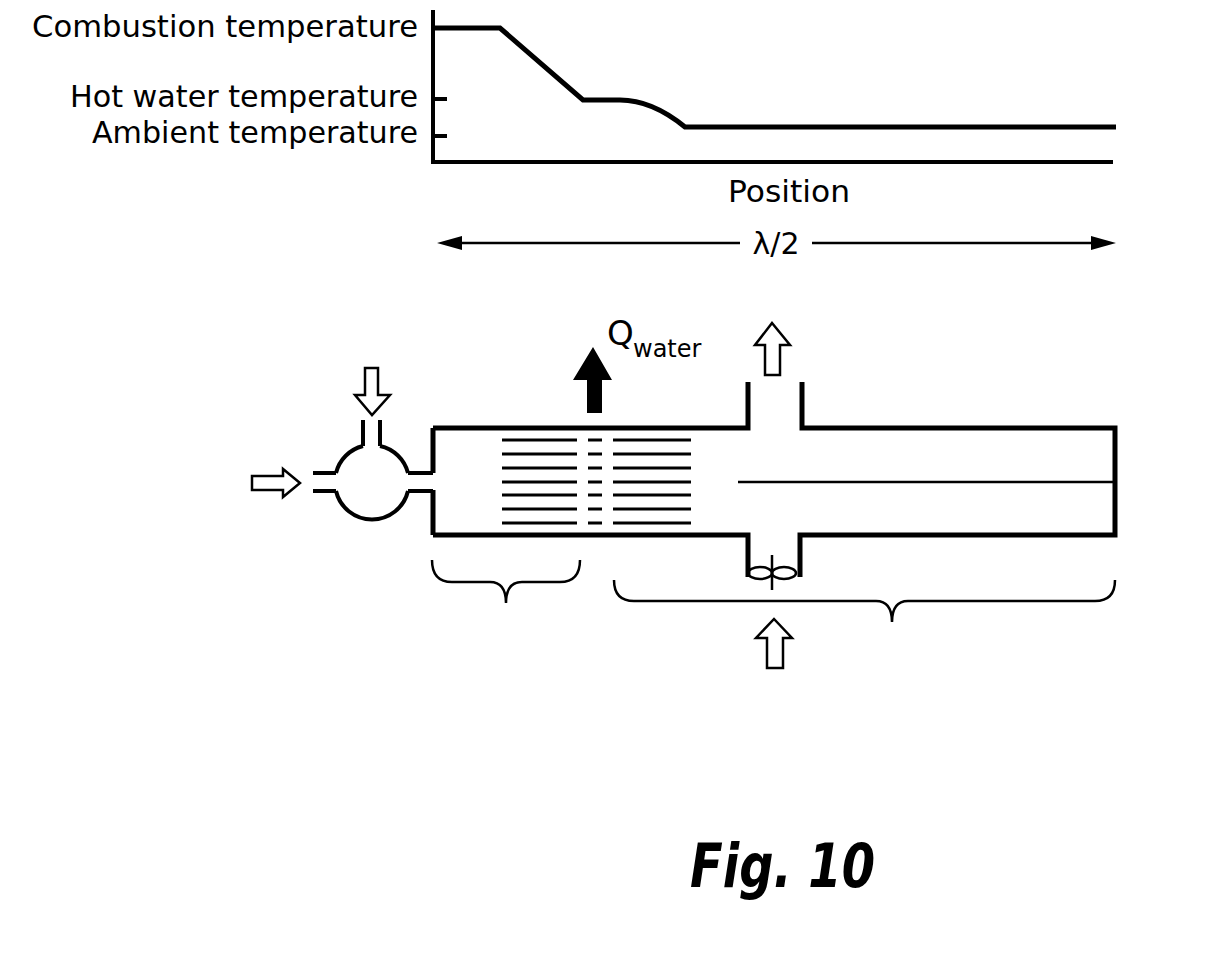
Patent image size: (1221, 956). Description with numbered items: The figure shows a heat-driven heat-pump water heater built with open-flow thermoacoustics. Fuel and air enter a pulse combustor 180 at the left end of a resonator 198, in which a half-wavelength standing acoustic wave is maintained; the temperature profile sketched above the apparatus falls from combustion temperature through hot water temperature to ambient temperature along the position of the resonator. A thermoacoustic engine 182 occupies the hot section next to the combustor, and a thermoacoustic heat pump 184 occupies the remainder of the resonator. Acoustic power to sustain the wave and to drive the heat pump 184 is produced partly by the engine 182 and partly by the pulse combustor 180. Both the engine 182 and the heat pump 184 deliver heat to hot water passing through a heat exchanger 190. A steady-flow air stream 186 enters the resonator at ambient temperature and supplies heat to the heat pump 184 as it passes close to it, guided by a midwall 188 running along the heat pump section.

The pulse combustor 180 is at (358, 522).
The thermoacoustic engine 182 is at (506, 605).
The thermoacoustic heat pump 184 is at (864, 619).
The steady-flow air stream 186 is at (762, 660).
The midwall 188 is at (1087, 478).
The heat exchanger 190 is at (595, 440).
The resonator 198 is at (915, 423).